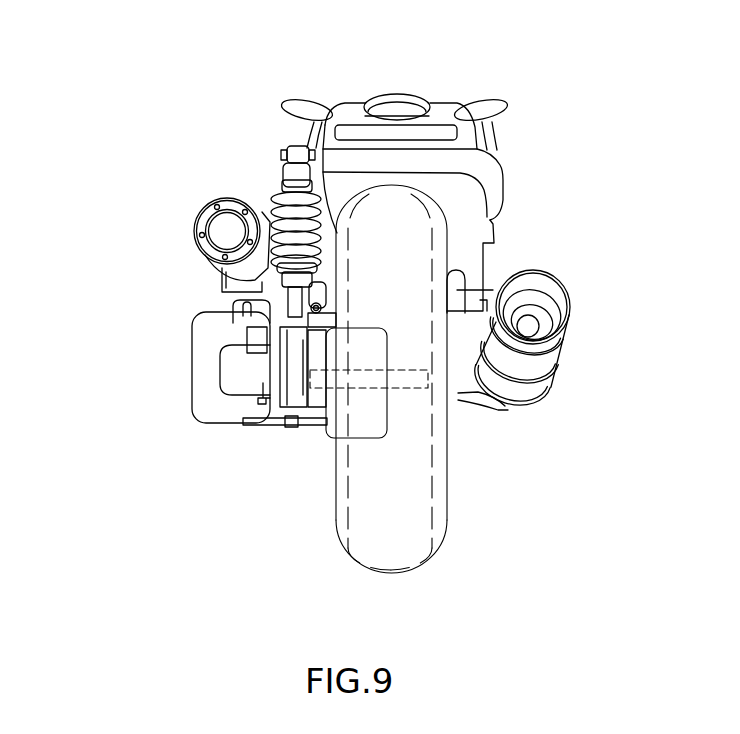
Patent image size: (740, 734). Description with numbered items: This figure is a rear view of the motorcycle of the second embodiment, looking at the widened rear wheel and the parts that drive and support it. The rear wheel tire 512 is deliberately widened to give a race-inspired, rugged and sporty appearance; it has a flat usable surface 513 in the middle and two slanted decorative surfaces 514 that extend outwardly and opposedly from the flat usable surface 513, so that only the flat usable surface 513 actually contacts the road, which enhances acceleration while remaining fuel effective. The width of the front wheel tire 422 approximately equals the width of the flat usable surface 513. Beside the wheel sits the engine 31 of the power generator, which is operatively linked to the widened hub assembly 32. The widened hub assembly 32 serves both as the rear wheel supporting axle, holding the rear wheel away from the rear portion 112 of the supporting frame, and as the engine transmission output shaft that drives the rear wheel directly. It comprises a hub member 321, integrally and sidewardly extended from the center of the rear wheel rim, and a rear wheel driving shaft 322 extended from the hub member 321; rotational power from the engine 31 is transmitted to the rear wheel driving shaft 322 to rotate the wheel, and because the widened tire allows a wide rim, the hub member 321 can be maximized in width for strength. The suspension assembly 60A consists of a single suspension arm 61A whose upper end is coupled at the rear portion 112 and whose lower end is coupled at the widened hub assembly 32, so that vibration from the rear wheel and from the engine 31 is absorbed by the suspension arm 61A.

The suspension assembly 60A is at (162, 154).
The suspension arm 61A is at (270, 231).
The rear portion 112 is at (312, 133).
The front wheel tire 422 is at (433, 239).
The engine 31 is at (537, 270).
The widened hub assembly 32 is at (278, 358).
The hub member 321 is at (362, 408).
The rear wheel driving shaft 322 is at (398, 380).
The rear wheel tire 512 is at (330, 613).
The flat usable surface 513 is at (395, 587).
The slanted decorative surfaces 514 is at (331, 565).